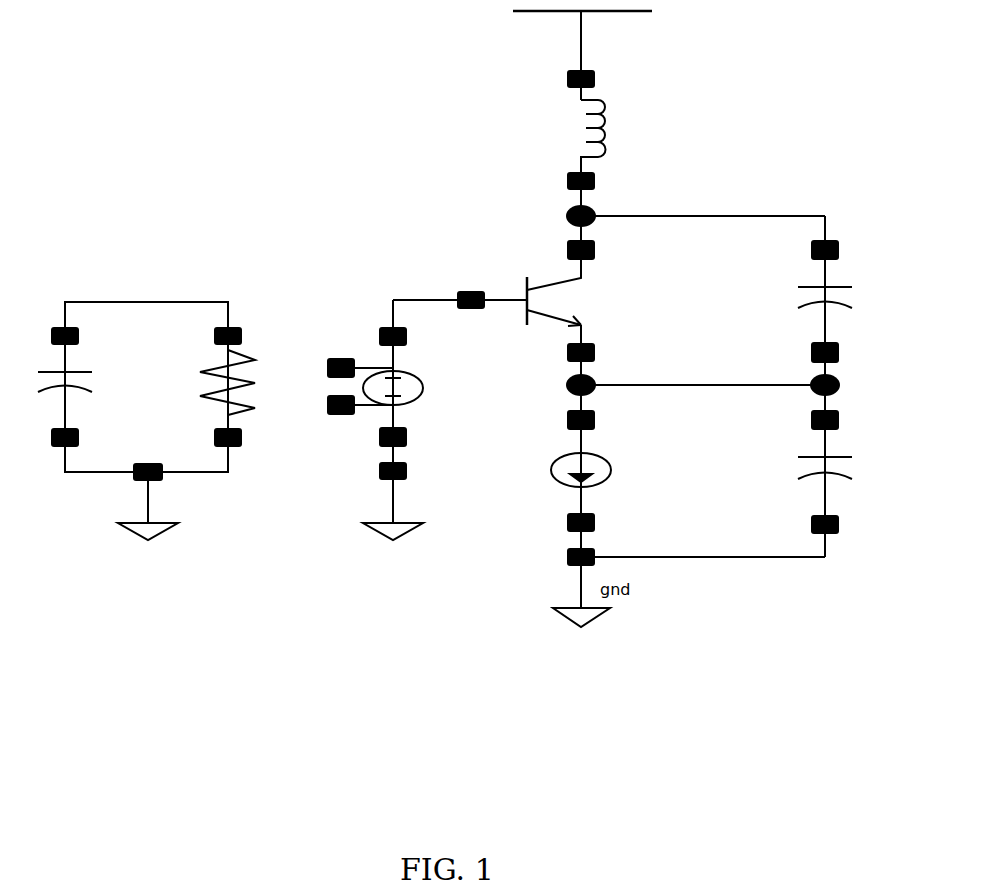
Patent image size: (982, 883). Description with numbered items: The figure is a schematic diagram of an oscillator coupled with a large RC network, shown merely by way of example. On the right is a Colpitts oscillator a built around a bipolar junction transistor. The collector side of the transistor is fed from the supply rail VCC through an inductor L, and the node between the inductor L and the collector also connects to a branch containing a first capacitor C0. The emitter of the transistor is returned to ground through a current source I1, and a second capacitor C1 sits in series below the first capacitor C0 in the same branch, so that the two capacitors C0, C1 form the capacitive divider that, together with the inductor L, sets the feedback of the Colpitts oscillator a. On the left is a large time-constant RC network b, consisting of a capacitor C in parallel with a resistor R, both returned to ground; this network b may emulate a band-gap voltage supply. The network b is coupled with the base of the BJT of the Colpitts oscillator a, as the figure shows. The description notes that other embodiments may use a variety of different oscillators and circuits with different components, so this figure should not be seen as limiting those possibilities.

The supply voltage rail VCC is at (582, 55).
The inductor L is at (593, 130).
The current source I1 is at (588, 471).
The capacitor C0 is at (834, 301).
The capacitor C1 is at (834, 472).
The Colpitts oscillator a is at (427, 404).
The large time-constant RC network b is at (149, 403).
The capacitor C is at (67, 387).
The resistor R is at (230, 387).